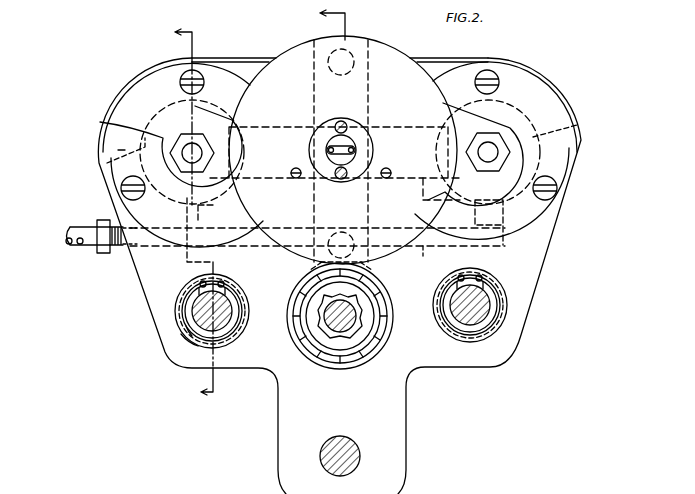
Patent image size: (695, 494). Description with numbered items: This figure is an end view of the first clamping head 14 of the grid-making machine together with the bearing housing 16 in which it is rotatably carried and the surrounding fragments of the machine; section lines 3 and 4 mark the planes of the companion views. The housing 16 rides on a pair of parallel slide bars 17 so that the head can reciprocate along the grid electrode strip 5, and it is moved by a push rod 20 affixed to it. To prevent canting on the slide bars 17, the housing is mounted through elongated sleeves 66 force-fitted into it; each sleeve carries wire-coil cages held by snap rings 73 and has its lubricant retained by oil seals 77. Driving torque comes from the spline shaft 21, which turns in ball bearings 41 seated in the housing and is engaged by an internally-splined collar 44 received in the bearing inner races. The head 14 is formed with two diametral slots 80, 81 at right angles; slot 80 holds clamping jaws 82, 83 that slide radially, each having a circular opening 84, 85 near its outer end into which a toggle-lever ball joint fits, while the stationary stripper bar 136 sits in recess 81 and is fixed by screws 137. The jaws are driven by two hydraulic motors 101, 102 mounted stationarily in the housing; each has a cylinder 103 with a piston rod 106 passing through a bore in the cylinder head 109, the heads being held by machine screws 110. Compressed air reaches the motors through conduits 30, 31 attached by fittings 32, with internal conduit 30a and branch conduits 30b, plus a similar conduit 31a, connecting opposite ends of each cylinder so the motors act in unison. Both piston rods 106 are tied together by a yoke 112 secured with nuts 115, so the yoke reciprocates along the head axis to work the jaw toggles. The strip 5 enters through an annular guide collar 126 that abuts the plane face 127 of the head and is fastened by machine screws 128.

The section line 3 is at (322, 23).
The section line 4 is at (185, 212).
The grid electrode strip 5 is at (352, 150).
The clamping head 14 is at (385, 55).
The bearing housing 16 is at (432, 66).
The slide bars 17 is at (194, 311).
The push rod 20 is at (353, 451).
The spline shaft 21 is at (357, 316).
The conduit 30 is at (90, 227).
The conduit 30a is at (229, 248).
The branch conduits 30b is at (187, 210).
The conduit 31 is at (66, 240).
The conduit 31a is at (418, 247).
The fittings 32 is at (101, 253).
The ball bearing 41 is at (345, 365).
The internally-splined collar 44 is at (325, 331).
The elongated sleeves 66 is at (185, 343).
The snap ring 73 is at (200, 280).
The oil seal 77 is at (183, 327).
The diametral slot 80 is at (369, 205).
The diametral slot 81 is at (435, 193).
The clamping jaw 82 is at (312, 90).
The clamping jaw 83 is at (314, 206).
The circular opening 84 is at (354, 46).
The circular opening 85 is at (376, 262).
The hydraulic motor 101 is at (150, 115).
The hydraulic motor 102 is at (553, 105).
The cylinder 103 is at (107, 164).
The piston rod 106 is at (205, 147).
The cylinder head 109 is at (118, 150).
The machine screws 110 is at (180, 77).
The yoke 112 is at (163, 138).
The nuts 115 is at (208, 155).
The guide collar 126 is at (375, 131).
The plane face 127 is at (398, 79).
The machine screws 128 is at (341, 121).
The stripper bar 136 is at (390, 168).
The screws 137 is at (350, 181).